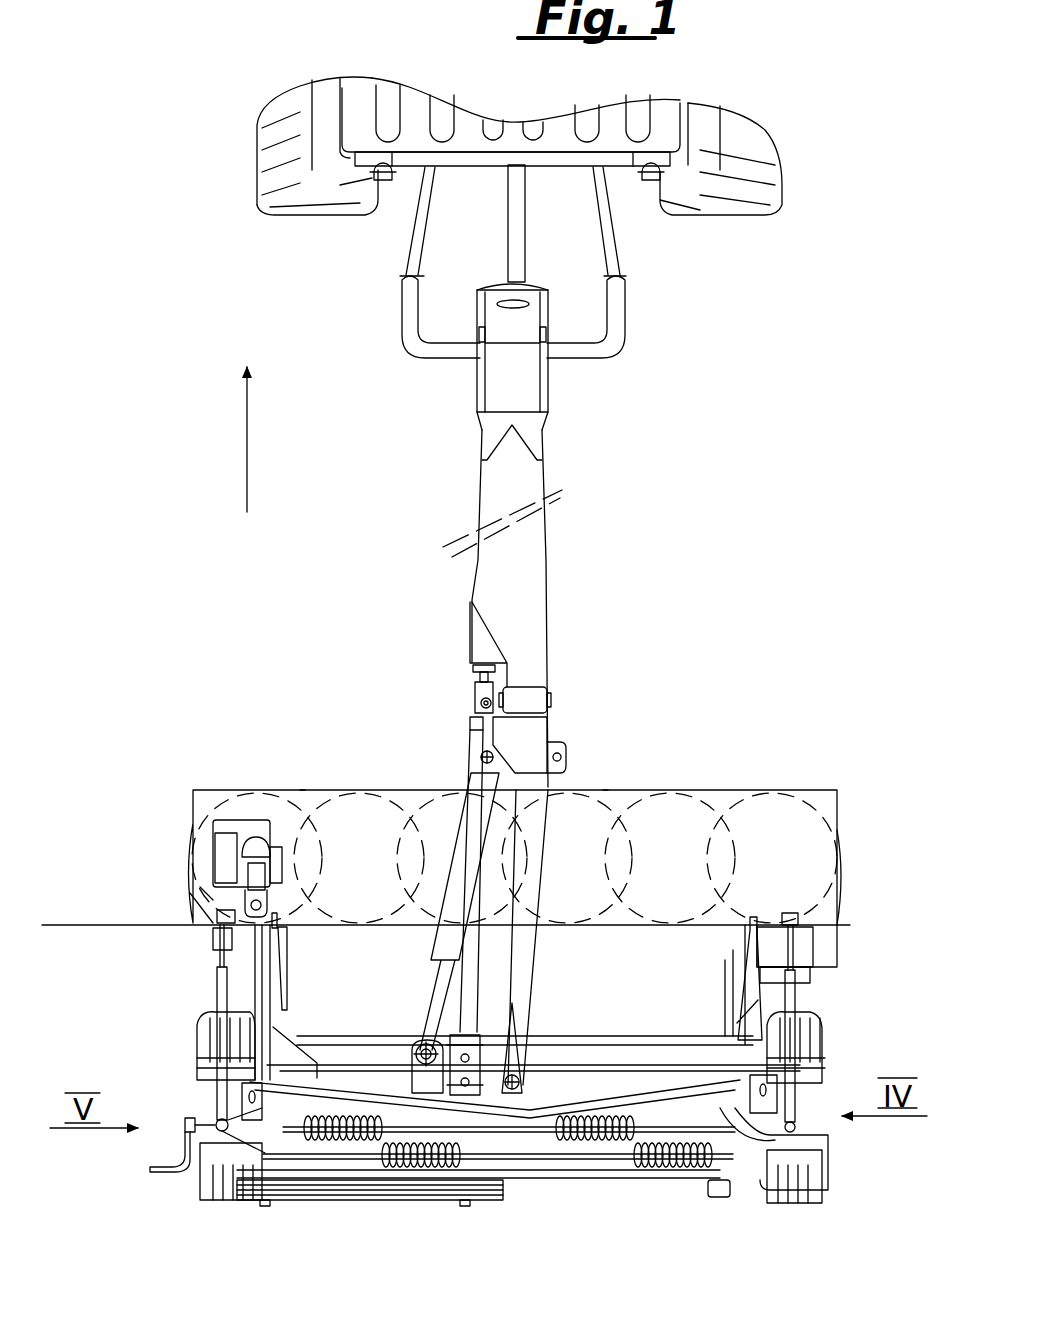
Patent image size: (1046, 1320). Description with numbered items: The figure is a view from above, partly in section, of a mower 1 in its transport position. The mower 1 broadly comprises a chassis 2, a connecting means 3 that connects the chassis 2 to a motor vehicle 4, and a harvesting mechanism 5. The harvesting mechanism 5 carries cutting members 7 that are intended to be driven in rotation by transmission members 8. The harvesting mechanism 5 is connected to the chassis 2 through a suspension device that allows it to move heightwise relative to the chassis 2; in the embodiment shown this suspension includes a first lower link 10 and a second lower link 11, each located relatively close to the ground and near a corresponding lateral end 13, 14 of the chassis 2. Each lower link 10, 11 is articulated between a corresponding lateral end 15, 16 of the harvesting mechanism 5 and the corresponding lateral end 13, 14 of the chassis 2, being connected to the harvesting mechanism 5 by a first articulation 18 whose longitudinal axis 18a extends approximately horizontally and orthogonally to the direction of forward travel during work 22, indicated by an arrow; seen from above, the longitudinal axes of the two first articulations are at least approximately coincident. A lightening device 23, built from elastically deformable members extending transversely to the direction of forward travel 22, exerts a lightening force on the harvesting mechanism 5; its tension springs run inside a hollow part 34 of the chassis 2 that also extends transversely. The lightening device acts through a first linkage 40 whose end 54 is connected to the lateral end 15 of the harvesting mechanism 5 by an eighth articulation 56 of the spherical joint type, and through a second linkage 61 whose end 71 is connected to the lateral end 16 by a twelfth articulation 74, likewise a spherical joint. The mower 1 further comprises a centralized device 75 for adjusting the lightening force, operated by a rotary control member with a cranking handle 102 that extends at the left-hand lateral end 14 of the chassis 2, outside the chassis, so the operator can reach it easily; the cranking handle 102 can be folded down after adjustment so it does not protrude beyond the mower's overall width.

The mower 1 is at (553, 556).
The chassis 2 is at (574, 1184).
The connecting means 3 is at (634, 353).
The motor vehicle 4 is at (761, 230).
The harvesting mechanism 5 is at (732, 788).
The cutting members 7 is at (318, 788).
The transmission members 8 is at (470, 696).
The first lower link 10 is at (745, 990).
The second lower link 11 is at (278, 992).
The lateral end of the chassis 13 is at (822, 1163).
The lateral end of the chassis 14 is at (195, 1170).
The lateral end of the harvesting mechanism 15 is at (847, 856).
The lateral end of the harvesting mechanism 16 is at (183, 861).
The first articulation 18 is at (750, 927).
The longitudinal axis 18a is at (73, 925).
The direction of forward travel during work 22 is at (247, 445).
The lightening device 23 is at (589, 1113).
The hollow part 34 is at (366, 1098).
The first linkage 40 is at (795, 995).
The end of the first linkage 54 is at (805, 937).
The eighth articulation 56 is at (805, 915).
The second linkage 61 is at (217, 997).
The end of the second linkage 71 is at (216, 936).
The twelfth articulation 74 is at (214, 908).
The centralized device for adjusting the lightening force 75 is at (186, 1121).
The cranking handle 102 is at (150, 1173).